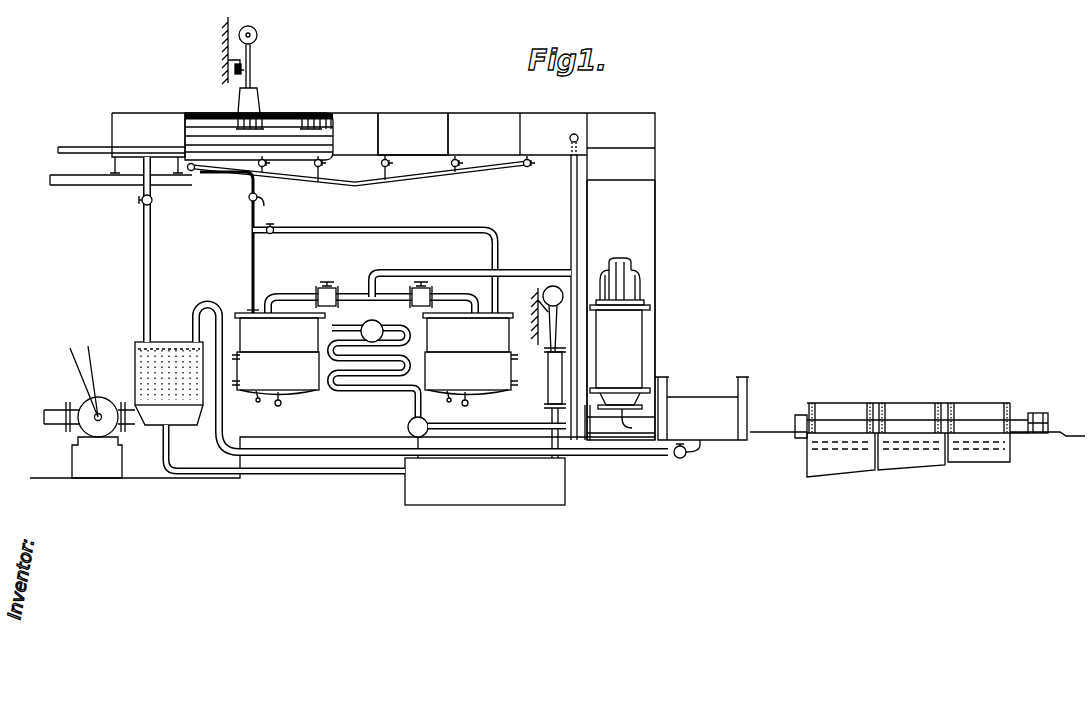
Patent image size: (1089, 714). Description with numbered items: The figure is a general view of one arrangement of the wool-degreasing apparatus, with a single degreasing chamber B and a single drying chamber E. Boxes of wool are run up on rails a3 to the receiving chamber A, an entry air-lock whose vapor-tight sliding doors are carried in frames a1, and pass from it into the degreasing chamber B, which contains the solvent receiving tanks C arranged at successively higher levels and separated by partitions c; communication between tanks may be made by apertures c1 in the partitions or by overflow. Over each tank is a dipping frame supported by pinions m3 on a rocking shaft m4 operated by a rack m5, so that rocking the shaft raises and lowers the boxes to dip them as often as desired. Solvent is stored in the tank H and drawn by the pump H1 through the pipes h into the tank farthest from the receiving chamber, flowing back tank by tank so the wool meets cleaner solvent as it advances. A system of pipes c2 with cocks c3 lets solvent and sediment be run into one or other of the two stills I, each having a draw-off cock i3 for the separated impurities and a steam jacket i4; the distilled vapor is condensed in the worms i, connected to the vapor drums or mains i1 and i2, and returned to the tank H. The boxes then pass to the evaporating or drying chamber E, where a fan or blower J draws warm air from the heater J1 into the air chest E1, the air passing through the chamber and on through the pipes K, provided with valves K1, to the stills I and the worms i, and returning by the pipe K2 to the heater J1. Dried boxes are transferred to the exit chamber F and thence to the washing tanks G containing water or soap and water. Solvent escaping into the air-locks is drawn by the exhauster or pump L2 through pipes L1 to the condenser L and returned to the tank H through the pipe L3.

The receiving chamber A is at (146, 150).
The degreasing chamber B is at (413, 134).
The door frames a1 is at (112, 170).
The rails a3 is at (121, 140).
The solvent receiving tanks C is at (240, 176).
The partitions c is at (326, 163).
The apertures c1 is at (249, 166).
The pipes c2 is at (205, 185).
The cocks c3 is at (268, 200).
The pinions m3 is at (328, 116).
The rocking shaft m4 is at (305, 116).
The rack m5 is at (262, 116).
The evaporating or drying chamber E is at (621, 164).
The air chest E1 is at (621, 310).
The pipes h is at (571, 210).
The pipes K is at (296, 292).
The valves K1 is at (340, 290).
The pipe K2 is at (548, 412).
The stills I is at (375, 354).
The worms i is at (374, 373).
The vapor drum or main i1 is at (372, 331).
The vapor drum or main i2 is at (407, 427).
The draw off cock i3 is at (278, 406).
The steam jacket i4 is at (254, 400).
The tank H is at (485, 481).
The pump H1 is at (548, 392).
The fan or blower J is at (630, 284).
The heater J1 is at (620, 357).
The exit chamber F is at (702, 408).
The condenser L is at (135, 366).
The pipes L1 is at (660, 458).
The exhauster or pump L2 is at (78, 410).
The pipe L3 is at (280, 474).
The washing tanks G is at (917, 427).